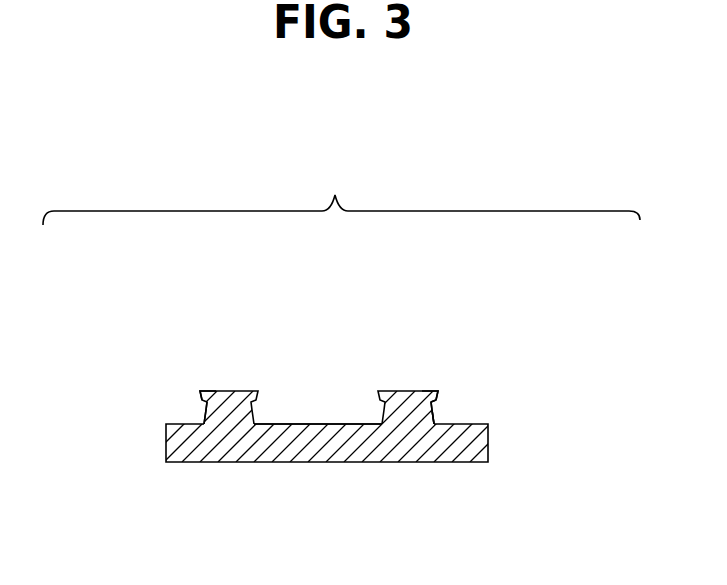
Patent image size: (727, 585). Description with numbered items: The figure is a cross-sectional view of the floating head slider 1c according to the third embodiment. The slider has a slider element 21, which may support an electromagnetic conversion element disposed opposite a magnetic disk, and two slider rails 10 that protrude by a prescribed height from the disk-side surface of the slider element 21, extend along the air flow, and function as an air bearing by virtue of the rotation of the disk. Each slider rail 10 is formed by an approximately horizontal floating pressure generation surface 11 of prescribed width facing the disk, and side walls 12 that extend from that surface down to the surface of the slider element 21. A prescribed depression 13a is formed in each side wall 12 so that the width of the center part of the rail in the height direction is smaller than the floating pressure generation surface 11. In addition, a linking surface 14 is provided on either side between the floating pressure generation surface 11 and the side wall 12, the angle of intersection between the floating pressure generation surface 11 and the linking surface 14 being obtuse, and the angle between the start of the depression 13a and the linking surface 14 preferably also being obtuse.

The floating head slider 1c is at (355, 190).
The slider rail 10 is at (243, 390).
The floating pressure generation surface 11 is at (213, 390).
The slider element 21 is at (320, 423).
The linking surface 14 is at (440, 390).
The side wall 12 is at (436, 405).
The depression 13a is at (205, 411).